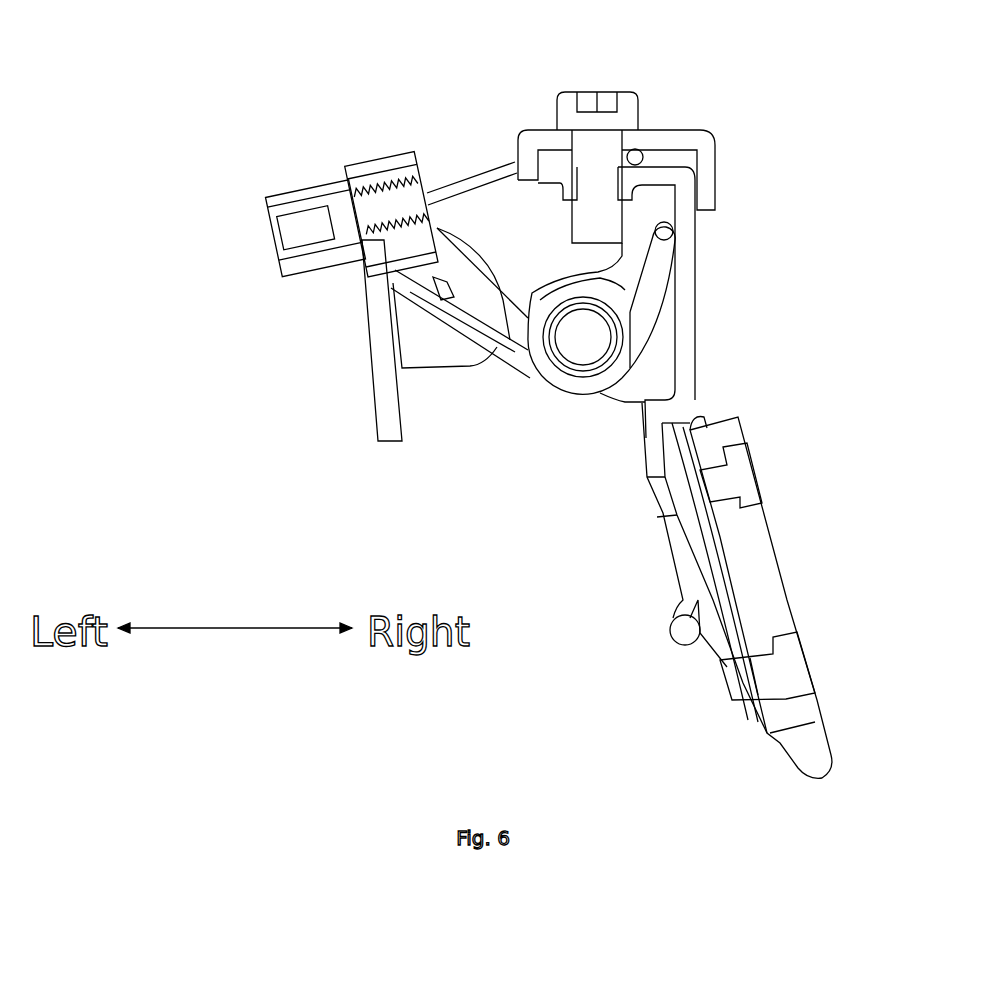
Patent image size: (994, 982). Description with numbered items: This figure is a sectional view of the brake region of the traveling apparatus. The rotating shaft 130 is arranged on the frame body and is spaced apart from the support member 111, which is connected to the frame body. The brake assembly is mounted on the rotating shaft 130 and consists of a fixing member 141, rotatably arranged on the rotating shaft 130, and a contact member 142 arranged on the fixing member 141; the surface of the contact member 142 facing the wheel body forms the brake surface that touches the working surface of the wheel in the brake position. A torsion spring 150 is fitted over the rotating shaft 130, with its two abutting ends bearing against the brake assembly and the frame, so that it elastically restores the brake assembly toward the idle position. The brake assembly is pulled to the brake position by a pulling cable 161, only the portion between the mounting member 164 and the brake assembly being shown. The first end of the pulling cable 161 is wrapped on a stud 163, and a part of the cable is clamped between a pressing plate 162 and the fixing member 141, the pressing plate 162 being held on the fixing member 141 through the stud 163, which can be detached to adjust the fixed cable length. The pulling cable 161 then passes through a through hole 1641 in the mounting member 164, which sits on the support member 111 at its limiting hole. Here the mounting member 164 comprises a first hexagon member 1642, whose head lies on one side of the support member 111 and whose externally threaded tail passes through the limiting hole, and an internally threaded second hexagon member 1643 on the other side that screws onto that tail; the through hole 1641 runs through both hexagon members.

The support member 111 is at (387, 380).
The rotating shaft 130 is at (590, 355).
The fixing member 141 is at (693, 560).
The contact member 142 is at (757, 545).
The torsion spring 150 is at (503, 342).
The pulling cable 161 is at (483, 183).
The pressing plate 162 is at (686, 143).
The stud 163 is at (598, 128).
The mounting member 164 is at (288, 207).
The through hole 1641 is at (400, 224).
The first hexagon member 1642 is at (347, 222).
The second hexagon member 1643 is at (392, 160).